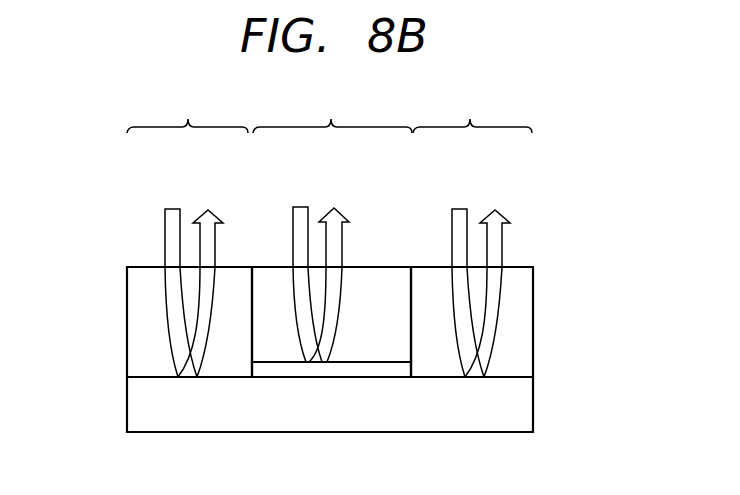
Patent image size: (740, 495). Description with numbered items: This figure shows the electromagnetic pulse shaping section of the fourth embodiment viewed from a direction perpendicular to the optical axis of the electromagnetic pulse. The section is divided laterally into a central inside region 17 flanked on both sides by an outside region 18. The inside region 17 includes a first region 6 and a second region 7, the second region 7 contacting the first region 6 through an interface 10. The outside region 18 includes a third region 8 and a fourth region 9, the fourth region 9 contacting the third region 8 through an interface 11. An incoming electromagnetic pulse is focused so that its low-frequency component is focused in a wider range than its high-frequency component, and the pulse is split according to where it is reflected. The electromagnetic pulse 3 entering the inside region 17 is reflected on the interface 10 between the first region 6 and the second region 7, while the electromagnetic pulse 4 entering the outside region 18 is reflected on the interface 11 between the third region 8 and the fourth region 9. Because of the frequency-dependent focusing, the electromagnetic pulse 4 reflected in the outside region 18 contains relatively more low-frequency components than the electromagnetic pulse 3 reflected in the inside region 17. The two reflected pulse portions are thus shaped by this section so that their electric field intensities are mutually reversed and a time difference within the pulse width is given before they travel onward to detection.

The electromagnetic pulse 3 is at (300, 207).
The electromagnetic pulse 4 is at (171, 210).
The first region 6 is at (380, 277).
The second region 7 is at (358, 368).
The third region 8 is at (135, 340).
The fourth region 9 is at (530, 410).
The interface 10 is at (282, 363).
The interface 11 is at (520, 377).
The inside region 17 is at (332, 110).
The outside region 18 is at (329, 110).